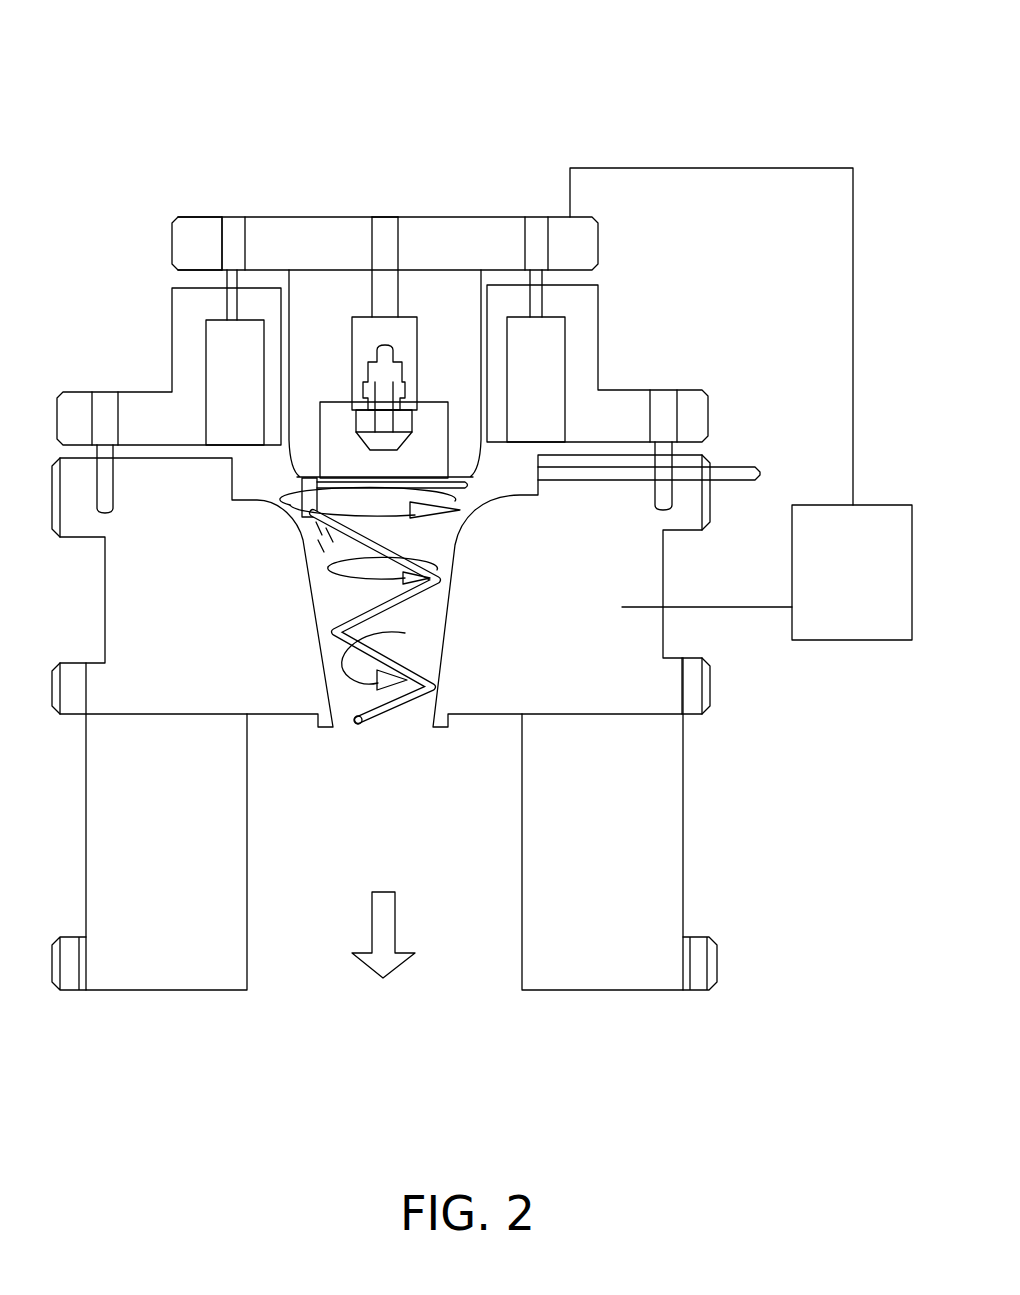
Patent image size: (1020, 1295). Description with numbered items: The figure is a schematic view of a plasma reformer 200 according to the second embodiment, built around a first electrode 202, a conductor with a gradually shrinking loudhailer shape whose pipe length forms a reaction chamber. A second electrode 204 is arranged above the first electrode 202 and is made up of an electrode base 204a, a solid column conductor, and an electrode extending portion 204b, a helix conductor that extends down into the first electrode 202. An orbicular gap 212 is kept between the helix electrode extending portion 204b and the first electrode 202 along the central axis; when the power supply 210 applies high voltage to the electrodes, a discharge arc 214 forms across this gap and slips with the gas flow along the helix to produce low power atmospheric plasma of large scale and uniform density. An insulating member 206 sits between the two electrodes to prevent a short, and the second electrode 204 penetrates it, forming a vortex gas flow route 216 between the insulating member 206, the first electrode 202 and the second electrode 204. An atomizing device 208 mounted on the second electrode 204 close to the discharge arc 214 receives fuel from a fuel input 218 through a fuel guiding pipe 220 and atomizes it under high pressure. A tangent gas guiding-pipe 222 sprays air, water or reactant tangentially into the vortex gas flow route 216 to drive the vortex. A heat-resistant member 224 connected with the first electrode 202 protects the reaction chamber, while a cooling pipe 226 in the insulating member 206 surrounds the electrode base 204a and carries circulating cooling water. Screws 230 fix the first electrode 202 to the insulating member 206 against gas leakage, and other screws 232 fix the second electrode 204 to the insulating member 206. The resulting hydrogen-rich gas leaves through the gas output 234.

The plasma reformer 200 is at (728, 115).
The first electrode 202 is at (622, 573).
The second electrode 204 is at (88, 182).
The electrode base 204a is at (197, 233).
The electrode extending portion 204b is at (290, 495).
The insulating member 206 is at (600, 362).
The atomizing device 208 is at (387, 420).
The power supply 210 is at (877, 530).
The orbicular gap 212 is at (432, 690).
The discharge arc 214 is at (318, 545).
The vortex gas flow route 216 is at (250, 482).
The fuel input 218 is at (387, 212).
The fuel guiding pipe 220 is at (370, 262).
The tangent gas guiding-pipe 222 is at (743, 475).
The heat-resistant member 224 is at (653, 880).
The cooling pipe 226 is at (535, 350).
The screws 230 is at (105, 407).
The screws 232 is at (233, 235).
The gas output 234 is at (312, 933).